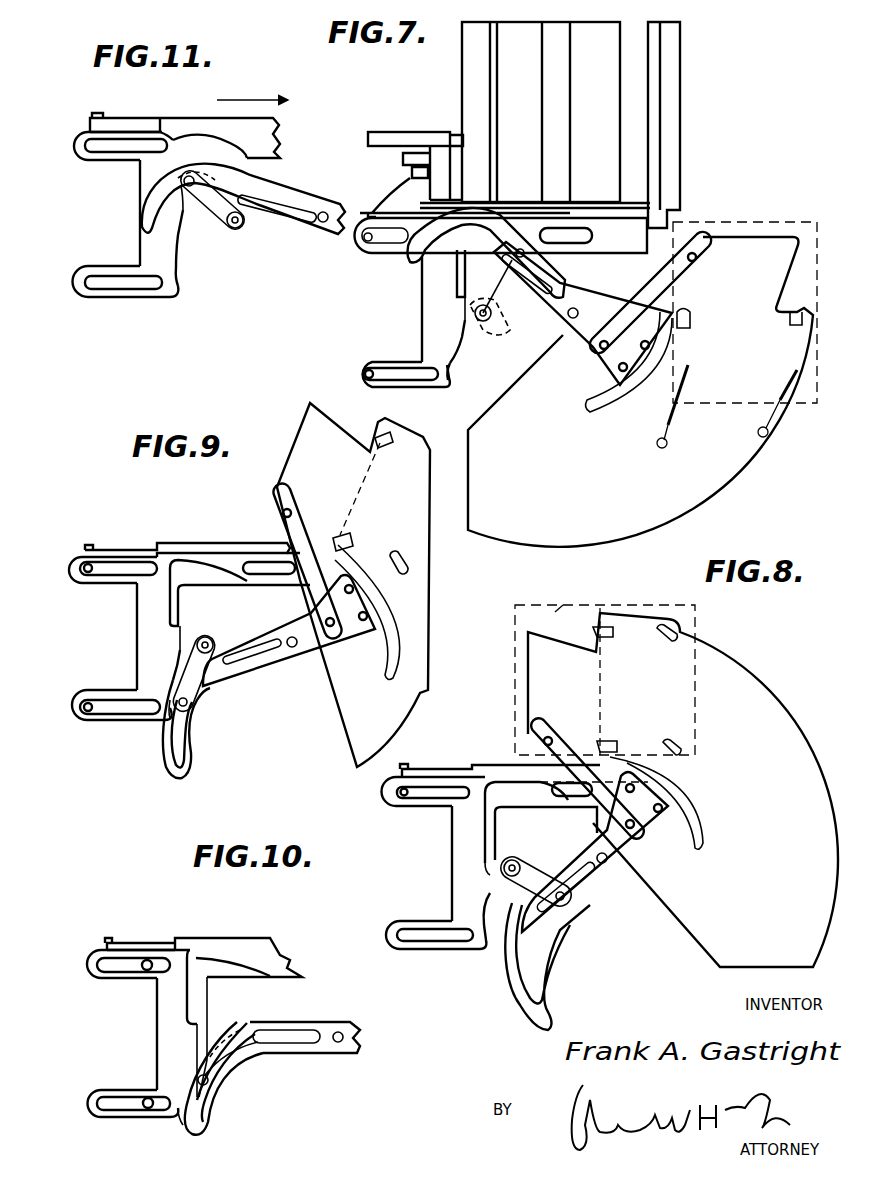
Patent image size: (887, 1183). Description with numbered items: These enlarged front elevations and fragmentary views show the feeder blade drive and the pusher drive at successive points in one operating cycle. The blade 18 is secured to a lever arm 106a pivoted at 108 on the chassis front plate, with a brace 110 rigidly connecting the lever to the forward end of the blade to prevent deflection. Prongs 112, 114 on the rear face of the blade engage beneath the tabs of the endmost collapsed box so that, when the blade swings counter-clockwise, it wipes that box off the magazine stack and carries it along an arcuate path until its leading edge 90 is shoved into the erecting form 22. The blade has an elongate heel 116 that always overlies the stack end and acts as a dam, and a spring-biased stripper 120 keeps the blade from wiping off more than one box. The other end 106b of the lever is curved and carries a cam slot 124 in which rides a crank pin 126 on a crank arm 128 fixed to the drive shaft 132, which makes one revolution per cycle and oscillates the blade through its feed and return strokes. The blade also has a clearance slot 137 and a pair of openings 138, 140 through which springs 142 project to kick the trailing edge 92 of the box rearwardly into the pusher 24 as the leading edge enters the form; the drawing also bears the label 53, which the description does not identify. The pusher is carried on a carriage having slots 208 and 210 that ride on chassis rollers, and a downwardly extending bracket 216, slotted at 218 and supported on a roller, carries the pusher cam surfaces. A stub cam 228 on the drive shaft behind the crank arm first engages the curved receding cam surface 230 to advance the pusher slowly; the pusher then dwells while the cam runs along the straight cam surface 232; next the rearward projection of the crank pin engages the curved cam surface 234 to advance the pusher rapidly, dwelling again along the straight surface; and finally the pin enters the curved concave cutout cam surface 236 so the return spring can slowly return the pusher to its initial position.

In FIG. 7, the blade 18 is at (768, 265).
In FIG. 9, the blade 18 is at (338, 475).
In FIG. 8, the blade 18 is at (577, 677).
In FIG. 7, the erecting form 22 is at (452, 72).
In FIG. 7, the pusher 24 is at (674, 95).
In FIG. 7, the cover edge 53 is at (806, 398).
In FIG. 7, the leading edge 90 is at (735, 222).
In FIG. 8, the leading edge 90 is at (516, 655).
In FIG. 7, the trailing edge 92 is at (800, 413).
In FIG. 8, the trailing edge 92 is at (697, 611).
In FIG. 7, the lever arm 106a is at (585, 315).
In FIG. 9, the lever arm 106a is at (308, 655).
In FIG. 8, the lever arm 106a is at (612, 862).
In FIG. 11, the other end of the lever 106b is at (282, 190).
In FIG. 7, the other end of the lever 106b is at (545, 262).
In FIG. 9, the other end of the lever 106b is at (186, 729).
In FIG. 8, the other end of the lever 106b is at (545, 935).
In FIG. 10, the other end of the lever 106b is at (210, 1105).
In FIG. 7, the pivot 108 is at (568, 318).
In FIG. 9, the pivot 108 is at (289, 637).
In FIG. 8, the pivot 108 is at (597, 855).
In FIG. 7, the brace 110 is at (650, 292).
In FIG. 9, the brace 110 is at (300, 530).
In FIG. 8, the brace 110 is at (567, 750).
In FIG. 7, the prong 112 is at (793, 326).
In FIG. 9, the prong 112 is at (385, 446).
In FIG. 8, the prong 112 is at (607, 637).
In FIG. 7, the prong 114 is at (692, 323).
In FIG. 9, the prong 114 is at (350, 540).
In FIG. 8, the prong 114 is at (612, 740).
In FIG. 8, the elongate heel 116 is at (690, 938).
In FIG. 11, the stripper 120 is at (193, 200).
In FIG. 11, the cam slot 124 is at (286, 212).
In FIG. 7, the cam slot 124 is at (540, 300).
In FIG. 9, the cam slot 124 is at (238, 665).
In FIG. 8, the cam slot 124 is at (530, 995).
In FIG. 10, the cam slot 124 is at (300, 1040).
In FIG. 7, the crank pin 126 is at (497, 261).
In FIG. 9, the crank pin 126 is at (188, 706).
In FIG. 8, the crank pin 126 is at (565, 902).
In FIG. 10, the crank pin 126 is at (214, 1040).
In FIG. 11, the crank arm 128 is at (222, 232).
In FIG. 7, the crank arm 128 is at (505, 274).
In FIG. 9, the crank arm 128 is at (214, 655).
In FIG. 8, the crank arm 128 is at (542, 880).
In FIG. 10, the crank arm 128 is at (252, 1055).
In FIG. 11, the drive shaft 132 is at (242, 228).
In FIG. 7, the drive shaft 132 is at (480, 322).
In FIG. 9, the drive shaft 132 is at (212, 642).
In FIG. 8, the drive shaft 132 is at (516, 862).
In FIG. 7, the clearance slot 137 is at (629, 362).
In FIG. 9, the clearance slot 137 is at (367, 612).
In FIG. 8, the clearance slot 137 is at (680, 795).
In FIG. 7, the opening 138 is at (793, 378).
In FIG. 8, the opening 138 is at (668, 642).
In FIG. 7, the opening 140 is at (683, 385).
In FIG. 9, the opening 140 is at (400, 556).
In FIG. 8, the opening 140 is at (678, 737).
In FIG. 7, the springs 142 is at (667, 424).
In FIG. 11, the slot 208 is at (185, 135).
In FIG. 7, the slot 208 is at (593, 237).
In FIG. 9, the slot 208 is at (187, 550).
In FIG. 8, the slot 208 is at (556, 784).
In FIG. 10, the slot 208 is at (203, 981).
In FIG. 11, the slot 210 is at (120, 146).
In FIG. 7, the slot 210 is at (393, 240).
In FIG. 9, the slot 210 is at (120, 570).
In FIG. 8, the slot 210 is at (436, 790).
In FIG. 10, the slot 210 is at (133, 968).
In FIG. 11, the bracket 216 is at (140, 177).
In FIG. 7, the bracket 216 is at (420, 305).
In FIG. 9, the bracket 216 is at (113, 636).
In FIG. 8, the bracket 216 is at (452, 850).
In FIG. 10, the bracket 216 is at (157, 1030).
In FIG. 11, the slot 218 is at (125, 284).
In FIG. 7, the slot 218 is at (418, 375).
In FIG. 9, the slot 218 is at (135, 707).
In FIG. 8, the slot 218 is at (443, 938).
In FIG. 10, the slot 218 is at (128, 1105).
In FIG. 11, the stub cam 228 is at (243, 224).
In FIG. 7, the stub cam 228 is at (500, 330).
In FIG. 9, the stub cam 228 is at (198, 625).
In FIG. 8, the stub cam 228 is at (510, 890).
In FIG. 11, the curved receding cam surface 230 is at (176, 228).
In FIG. 7, the curved receding cam surface 230 is at (445, 339).
In FIG. 9, the curved receding cam surface 230 is at (161, 665).
In FIG. 8, the curved receding cam surface 230 is at (488, 898).
In FIG. 10, the curved receding cam surface 230 is at (200, 1075).
In FIG. 11, the straight cam surface 232 is at (200, 222).
In FIG. 7, the straight cam surface 232 is at (462, 322).
In FIG. 9, the straight cam surface 232 is at (178, 652).
In FIG. 8, the straight cam surface 232 is at (484, 860).
In FIG. 10, the straight cam surface 232 is at (197, 1040).
In FIG. 11, the curved cam surface 234 is at (180, 288).
In FIG. 7, the curved cam surface 234 is at (466, 380).
In FIG. 9, the curved cam surface 234 is at (168, 712).
In FIG. 8, the curved cam surface 234 is at (488, 950).
In FIG. 10, the curved cam surface 234 is at (178, 1118).
In FIG. 11, the curved concave cutout cam surface 236 is at (172, 162).
In FIG. 7, the curved concave cutout cam surface 236 is at (456, 270).
In FIG. 9, the curved concave cutout cam surface 236 is at (172, 590).
In FIG. 8, the curved concave cutout cam surface 236 is at (541, 822).
In FIG. 10, the curved concave cutout cam surface 236 is at (196, 1003).